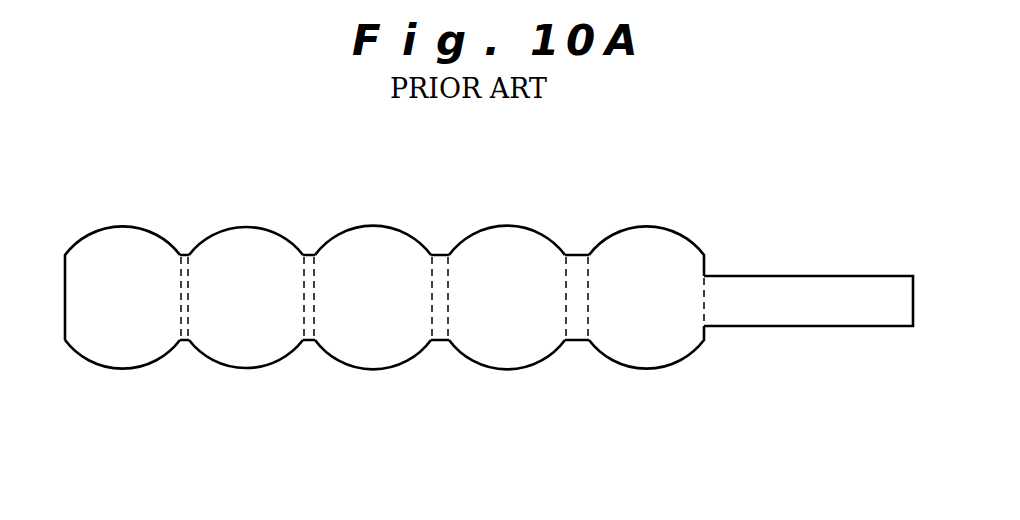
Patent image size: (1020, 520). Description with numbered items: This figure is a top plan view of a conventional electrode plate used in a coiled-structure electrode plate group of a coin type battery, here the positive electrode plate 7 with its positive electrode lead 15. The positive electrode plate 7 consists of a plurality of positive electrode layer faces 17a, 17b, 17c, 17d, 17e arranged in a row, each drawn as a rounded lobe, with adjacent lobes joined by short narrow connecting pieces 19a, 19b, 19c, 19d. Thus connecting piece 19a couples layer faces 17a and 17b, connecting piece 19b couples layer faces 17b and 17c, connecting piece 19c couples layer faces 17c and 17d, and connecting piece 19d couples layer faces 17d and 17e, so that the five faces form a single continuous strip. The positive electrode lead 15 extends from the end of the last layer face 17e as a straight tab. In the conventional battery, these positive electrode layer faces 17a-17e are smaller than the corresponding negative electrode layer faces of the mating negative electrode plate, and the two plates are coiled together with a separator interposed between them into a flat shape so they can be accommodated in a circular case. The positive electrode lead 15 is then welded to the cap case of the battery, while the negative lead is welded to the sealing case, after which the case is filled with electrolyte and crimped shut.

The positive electrode plate 7 is at (135, 202).
The positive electrode lead 15 is at (803, 296).
The positive electrode layer face 17a is at (127, 260).
The positive electrode layer face 17b is at (250, 265).
The positive electrode layer face 17c is at (381, 262).
The positive electrode layer face 17d is at (517, 262).
The positive electrode layer face 17e is at (652, 257).
The connecting piece 19a is at (183, 305).
The connecting piece 19b is at (312, 305).
The connecting piece 19c is at (447, 305).
The connecting piece 19d is at (587, 306).